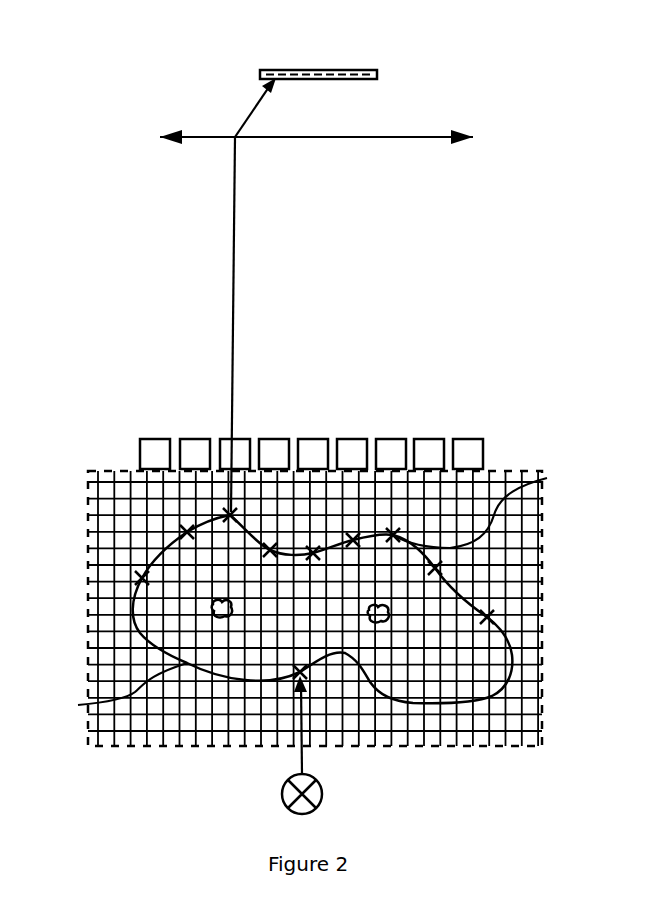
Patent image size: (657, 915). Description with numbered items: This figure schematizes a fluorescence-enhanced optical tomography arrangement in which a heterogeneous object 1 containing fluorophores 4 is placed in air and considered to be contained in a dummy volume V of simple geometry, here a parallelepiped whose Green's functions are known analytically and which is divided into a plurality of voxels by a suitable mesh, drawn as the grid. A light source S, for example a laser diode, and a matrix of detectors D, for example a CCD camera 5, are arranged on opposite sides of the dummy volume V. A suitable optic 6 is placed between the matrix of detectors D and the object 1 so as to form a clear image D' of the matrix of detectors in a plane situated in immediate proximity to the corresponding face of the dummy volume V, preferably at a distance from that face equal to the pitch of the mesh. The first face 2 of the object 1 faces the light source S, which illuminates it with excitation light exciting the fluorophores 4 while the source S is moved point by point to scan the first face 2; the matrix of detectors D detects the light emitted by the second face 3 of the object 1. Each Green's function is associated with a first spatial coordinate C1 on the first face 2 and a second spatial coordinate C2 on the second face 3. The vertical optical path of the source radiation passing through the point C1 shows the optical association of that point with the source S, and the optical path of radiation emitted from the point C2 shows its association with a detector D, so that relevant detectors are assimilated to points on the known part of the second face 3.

The object 1 is at (520, 647).
The first face 2 is at (118, 691).
The second face 3 is at (478, 507).
The fluorophores 4 is at (210, 607).
The CCD camera 5 is at (363, 80).
The optic 6 is at (425, 139).
The first spatial coordinate C1 is at (310, 668).
The second spatial coordinate C2 is at (218, 514).
The matrix of detectors D is at (322, 64).
The image of the matrix of detectors D' is at (353, 440).
The light source S is at (283, 808).
The dummy volume V is at (87, 542).